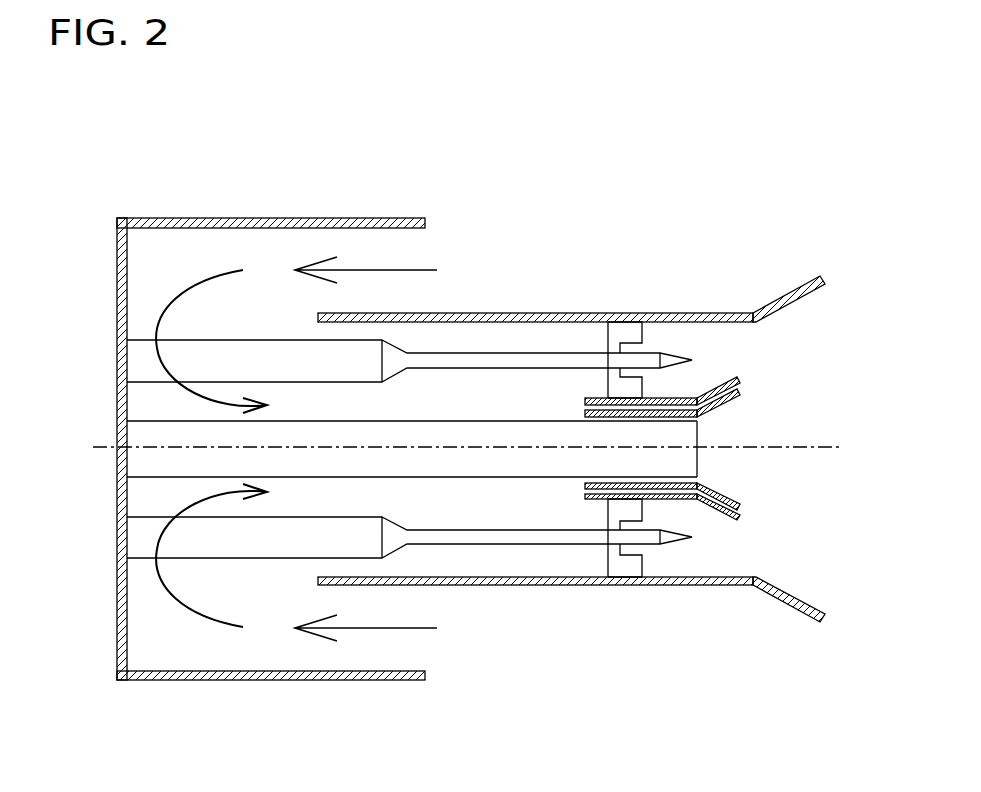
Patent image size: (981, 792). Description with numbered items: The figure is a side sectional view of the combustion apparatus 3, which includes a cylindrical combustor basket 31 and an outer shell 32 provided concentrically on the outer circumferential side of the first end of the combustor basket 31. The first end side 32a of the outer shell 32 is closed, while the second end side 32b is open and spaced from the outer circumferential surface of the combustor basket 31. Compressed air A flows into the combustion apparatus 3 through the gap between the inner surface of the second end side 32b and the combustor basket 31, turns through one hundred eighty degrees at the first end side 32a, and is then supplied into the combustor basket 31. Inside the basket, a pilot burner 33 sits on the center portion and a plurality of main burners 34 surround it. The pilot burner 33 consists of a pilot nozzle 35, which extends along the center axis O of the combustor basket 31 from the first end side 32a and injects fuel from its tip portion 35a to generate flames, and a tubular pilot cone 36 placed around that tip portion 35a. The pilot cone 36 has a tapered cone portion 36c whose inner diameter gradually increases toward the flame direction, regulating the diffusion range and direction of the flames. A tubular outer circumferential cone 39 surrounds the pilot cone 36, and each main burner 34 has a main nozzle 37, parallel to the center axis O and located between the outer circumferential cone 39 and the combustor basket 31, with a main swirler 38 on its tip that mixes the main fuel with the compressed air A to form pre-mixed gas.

The combustion apparatus 3 is at (499, 382).
The combustor basket 31 is at (562, 313).
The outer shell 32 is at (236, 396).
The first end side of the outer shell 32a is at (117, 368).
The second end side of the outer shell 32b is at (422, 218).
The pilot burner 33 is at (860, 383).
The main burner 34 is at (860, 295).
The pilot nozzle 35 is at (499, 459).
The tip portion of the pilot nozzle 35a is at (698, 470).
The pilot cone 36 is at (718, 398).
The tapered cone portion 36c is at (737, 510).
The main nozzle 37 is at (692, 360).
The main swirler 38 is at (643, 334).
The outer circumferential cone 39 is at (600, 397).
The compressed air A is at (194, 280).
The center axis O is at (105, 445).